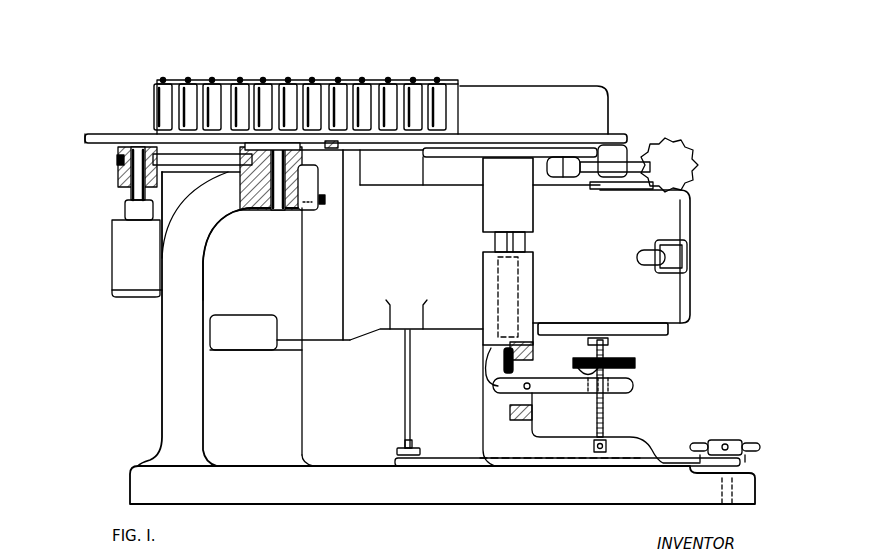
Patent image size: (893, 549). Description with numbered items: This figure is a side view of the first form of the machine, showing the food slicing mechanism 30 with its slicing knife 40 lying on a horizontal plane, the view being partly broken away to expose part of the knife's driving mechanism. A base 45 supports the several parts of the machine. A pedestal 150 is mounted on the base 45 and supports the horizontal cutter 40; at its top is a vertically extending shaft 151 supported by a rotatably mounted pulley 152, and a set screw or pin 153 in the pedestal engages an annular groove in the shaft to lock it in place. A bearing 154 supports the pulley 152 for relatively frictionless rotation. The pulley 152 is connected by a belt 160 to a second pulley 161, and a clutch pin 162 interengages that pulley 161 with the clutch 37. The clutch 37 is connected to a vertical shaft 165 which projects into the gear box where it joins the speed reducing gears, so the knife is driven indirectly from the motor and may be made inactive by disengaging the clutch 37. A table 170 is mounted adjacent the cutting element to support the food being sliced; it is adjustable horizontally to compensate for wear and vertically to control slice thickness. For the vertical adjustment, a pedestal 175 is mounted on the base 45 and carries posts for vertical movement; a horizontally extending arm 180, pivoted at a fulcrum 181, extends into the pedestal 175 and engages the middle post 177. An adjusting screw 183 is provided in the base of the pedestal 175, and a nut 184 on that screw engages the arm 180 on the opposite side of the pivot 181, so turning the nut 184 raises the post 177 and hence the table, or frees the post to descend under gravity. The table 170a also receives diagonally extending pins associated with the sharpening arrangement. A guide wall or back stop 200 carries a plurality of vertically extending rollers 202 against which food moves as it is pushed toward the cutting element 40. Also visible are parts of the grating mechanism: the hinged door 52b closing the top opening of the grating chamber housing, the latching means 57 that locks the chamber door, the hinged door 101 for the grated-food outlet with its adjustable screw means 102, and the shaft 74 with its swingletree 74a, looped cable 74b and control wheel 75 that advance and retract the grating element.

The base 45 is at (648, 500).
The pedestal 150 is at (165, 378).
The bearing 154 is at (243, 214).
The food slicing mechanism 30 is at (237, 144).
The second pulley 161 is at (117, 155).
The clutch pin 162 is at (117, 148).
The clutch 37 is at (123, 185).
The vertical shaft 165 is at (125, 205).
The belt 160 is at (185, 165).
The table 170 is at (613, 135).
The table 170a is at (100, 133).
The vertically extending rollers 202 is at (170, 102).
The guide wall or back stop 200 is at (515, 92).
The vertically extending shaft 151 is at (279, 210).
The pulley 152 is at (313, 163).
The set screw or pin 153 is at (322, 205).
The slicing knife 40 is at (331, 147).
The hinged door 101 is at (666, 336).
The hinged door 52b is at (612, 191).
The latching means 57 is at (676, 280).
The pedestal 175 is at (492, 423).
The middle post 177 is at (503, 355).
The adjustable screw means 102 is at (588, 341).
The horizontally extending arm 180 is at (565, 394).
The pivot or fulcrum 181 is at (524, 386).
The adjusting screw 183 is at (608, 418).
The nut 184 is at (636, 363).
The shaft 74 is at (403, 398).
The swingletree 74a is at (402, 444).
The cable 74b is at (445, 467).
The control wheel 75 is at (735, 443).